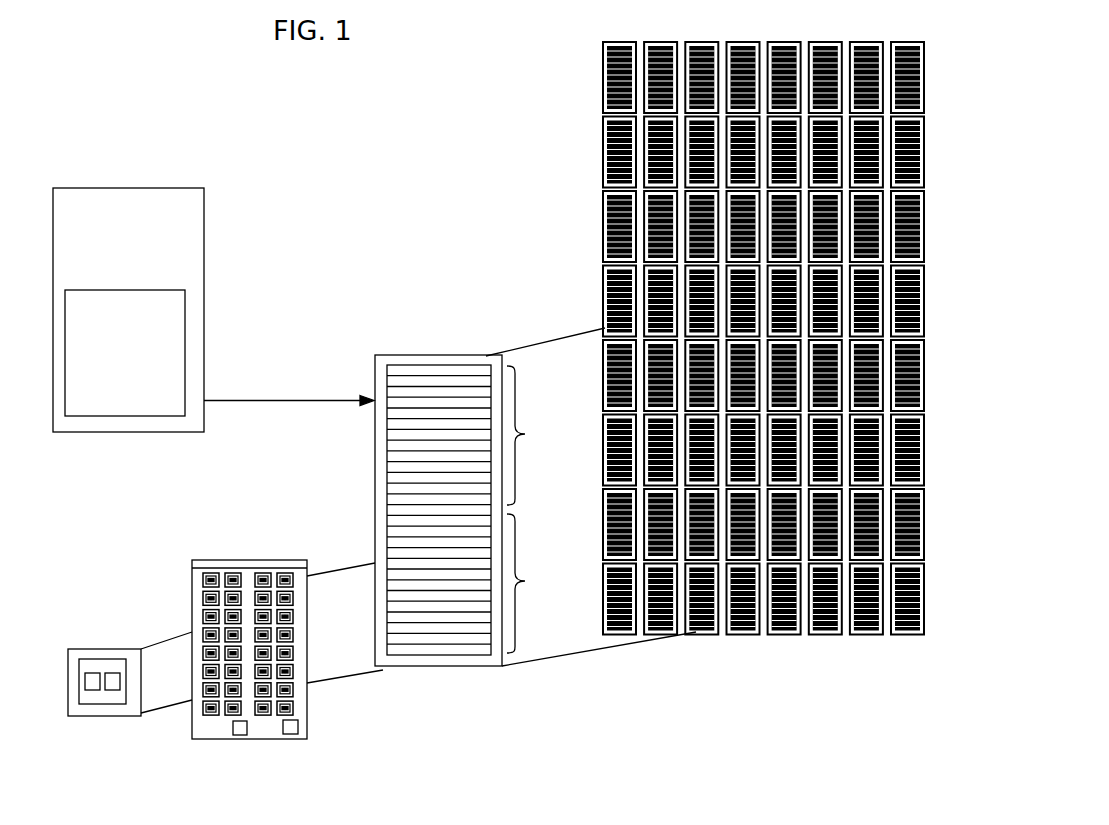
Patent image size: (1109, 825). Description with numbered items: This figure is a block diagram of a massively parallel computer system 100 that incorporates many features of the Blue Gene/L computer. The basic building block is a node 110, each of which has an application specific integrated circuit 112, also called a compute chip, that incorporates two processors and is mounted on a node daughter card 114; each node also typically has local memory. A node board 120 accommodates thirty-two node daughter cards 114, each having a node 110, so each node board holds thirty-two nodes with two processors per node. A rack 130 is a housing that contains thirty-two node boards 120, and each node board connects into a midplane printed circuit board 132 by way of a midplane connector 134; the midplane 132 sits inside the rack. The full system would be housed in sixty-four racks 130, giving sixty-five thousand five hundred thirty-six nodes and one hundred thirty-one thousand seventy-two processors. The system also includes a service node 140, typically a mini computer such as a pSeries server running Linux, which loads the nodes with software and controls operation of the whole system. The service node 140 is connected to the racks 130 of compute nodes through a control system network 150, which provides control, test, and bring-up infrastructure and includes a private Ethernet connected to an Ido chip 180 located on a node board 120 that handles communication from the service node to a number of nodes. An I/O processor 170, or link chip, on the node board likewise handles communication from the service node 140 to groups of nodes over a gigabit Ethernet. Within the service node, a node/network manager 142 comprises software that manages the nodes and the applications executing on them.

The massively parallel computer system 100 is at (271, 136).
The node 110 is at (75, 638).
The application specific integrated circuit 112 is at (73, 697).
The node daughter card 114 is at (107, 712).
The node board 120 is at (295, 641).
The rack 130 is at (530, 173).
The midplane printed circuit board 132 is at (553, 509).
The midplane connector 134 is at (184, 557).
The service node 140 is at (101, 262).
The node/network manager 142 is at (99, 396).
The control system network 150 is at (233, 392).
The I/O processor 170 is at (232, 727).
The Ido chip 180 is at (283, 727).